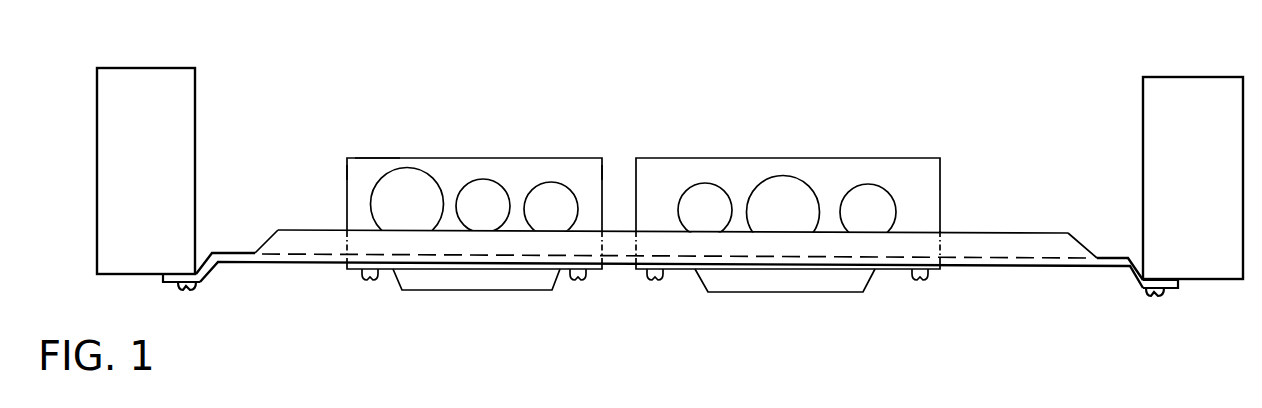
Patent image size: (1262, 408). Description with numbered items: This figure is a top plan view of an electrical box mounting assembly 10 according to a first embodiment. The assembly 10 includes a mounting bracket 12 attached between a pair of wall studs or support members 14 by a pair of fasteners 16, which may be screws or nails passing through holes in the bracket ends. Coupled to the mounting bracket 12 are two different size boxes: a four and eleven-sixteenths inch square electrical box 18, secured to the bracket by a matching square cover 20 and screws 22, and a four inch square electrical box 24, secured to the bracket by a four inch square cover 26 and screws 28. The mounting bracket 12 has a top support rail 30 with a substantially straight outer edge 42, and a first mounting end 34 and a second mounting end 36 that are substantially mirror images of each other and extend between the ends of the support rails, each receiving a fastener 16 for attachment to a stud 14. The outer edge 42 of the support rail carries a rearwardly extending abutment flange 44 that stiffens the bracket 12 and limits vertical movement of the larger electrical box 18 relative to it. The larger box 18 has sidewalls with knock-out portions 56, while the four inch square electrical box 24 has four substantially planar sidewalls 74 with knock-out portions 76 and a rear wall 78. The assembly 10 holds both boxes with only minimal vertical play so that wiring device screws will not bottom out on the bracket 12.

The electrical box mounting assembly 10 is at (876, 114).
The mounting bracket 12 is at (1050, 274).
The wall studs or support members 14 is at (195, 68).
The fasteners 16 is at (180, 290).
The 4 11/16 inch square electrical box 18 is at (926, 155).
The 4 11/16 inch square cover 20 is at (778, 293).
The screws 22 is at (670, 281).
The 4 inch square electrical box 24 is at (557, 155).
The 4 inch square cover 26 is at (463, 295).
The screws 28 is at (363, 281).
The top support rail 30 is at (291, 263).
The first mounting end 34 is at (224, 252).
The second mounting end 36 is at (1112, 257).
The outer edge 42 is at (975, 256).
The abutment flange 44 is at (1027, 232).
The knock-out portions 56 is at (848, 192).
The sidewalls 74 is at (347, 172).
The knock-out portions 76 is at (532, 188).
The rear wall 78 is at (370, 158).